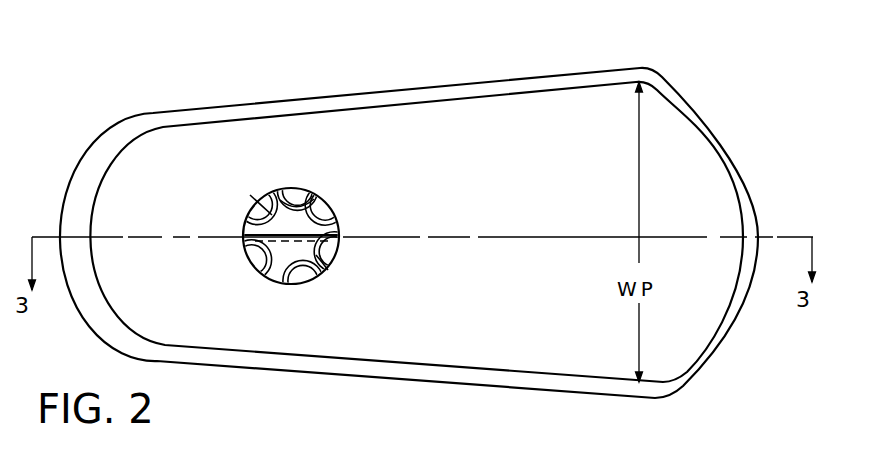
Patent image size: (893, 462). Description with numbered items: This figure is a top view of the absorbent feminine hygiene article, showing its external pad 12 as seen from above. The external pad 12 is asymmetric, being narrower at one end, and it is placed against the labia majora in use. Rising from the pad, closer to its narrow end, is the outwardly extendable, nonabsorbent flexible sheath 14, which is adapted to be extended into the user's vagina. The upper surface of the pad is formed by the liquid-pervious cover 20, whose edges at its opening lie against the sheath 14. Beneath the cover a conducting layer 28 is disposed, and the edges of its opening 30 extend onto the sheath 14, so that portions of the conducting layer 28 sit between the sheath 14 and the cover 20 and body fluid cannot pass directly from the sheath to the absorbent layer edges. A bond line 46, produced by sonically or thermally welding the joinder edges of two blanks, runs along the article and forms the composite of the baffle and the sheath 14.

The external pad 12 is at (450, 85).
The liquid-pervious cover 20 is at (580, 169).
The nonabsorbent flexible sheath 14 is at (300, 222).
The opening 30 is at (303, 188).
The bond line 46 is at (258, 207).
The conducting layer 28 is at (327, 255).